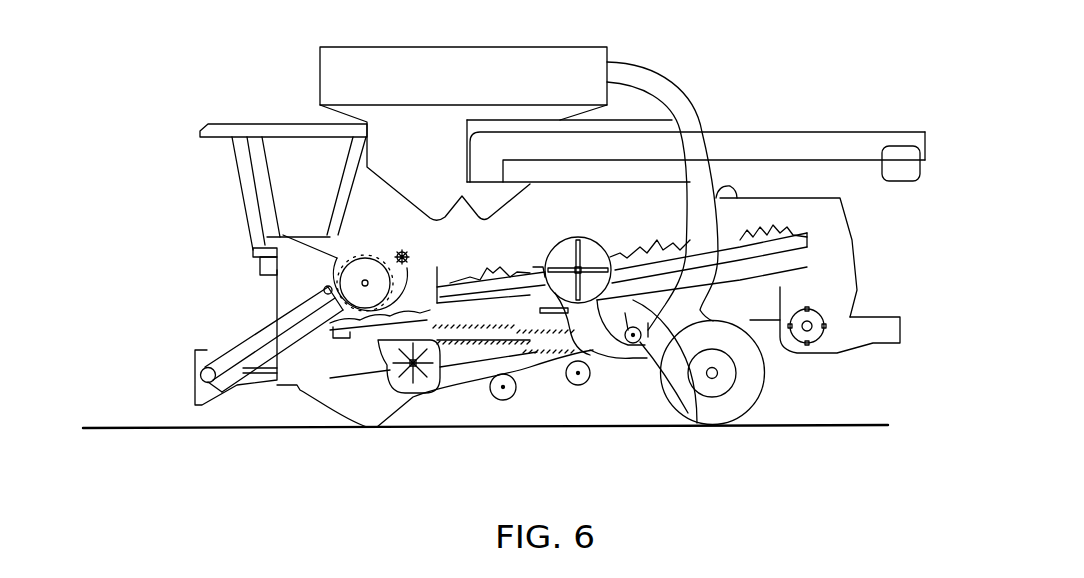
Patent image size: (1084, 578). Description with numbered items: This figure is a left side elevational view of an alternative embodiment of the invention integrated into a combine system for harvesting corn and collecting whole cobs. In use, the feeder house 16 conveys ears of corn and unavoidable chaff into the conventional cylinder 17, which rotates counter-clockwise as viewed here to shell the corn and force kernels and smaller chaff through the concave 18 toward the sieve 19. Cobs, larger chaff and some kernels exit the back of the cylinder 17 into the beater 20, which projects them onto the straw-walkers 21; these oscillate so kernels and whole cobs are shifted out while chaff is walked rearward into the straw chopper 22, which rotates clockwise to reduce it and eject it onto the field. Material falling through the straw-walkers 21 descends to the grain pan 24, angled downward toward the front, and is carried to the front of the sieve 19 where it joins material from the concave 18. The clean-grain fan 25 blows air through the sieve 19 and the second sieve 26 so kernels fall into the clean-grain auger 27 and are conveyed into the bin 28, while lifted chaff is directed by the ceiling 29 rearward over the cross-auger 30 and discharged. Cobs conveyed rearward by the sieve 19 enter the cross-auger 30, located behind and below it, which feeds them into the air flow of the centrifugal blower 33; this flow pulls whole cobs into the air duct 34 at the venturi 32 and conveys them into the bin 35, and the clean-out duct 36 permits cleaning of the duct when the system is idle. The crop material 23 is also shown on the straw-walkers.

The feeder house 16 is at (240, 350).
The conventional cylinder 17 is at (285, 237).
The concave 18 is at (325, 288).
The sieve 19 is at (540, 380).
The beater 20 is at (365, 255).
The straw-walkers 21 is at (785, 235).
The straw chopper 22 is at (815, 338).
The crop material 23 is at (757, 227).
The grain pan 24 is at (802, 266).
The clean-grain fan 25 is at (313, 380).
The sieve 26 is at (410, 390).
The clean-grain auger 27 is at (495, 398).
The bin 28 is at (410, 152).
The ceiling 29 is at (650, 298).
The cross-auger 30 is at (697, 423).
The venturi 32 is at (633, 357).
The centrifugal blower 33 is at (600, 257).
The air duct 34 is at (677, 100).
The bin 35 is at (350, 75).
The clean-out duct 36 is at (647, 358).